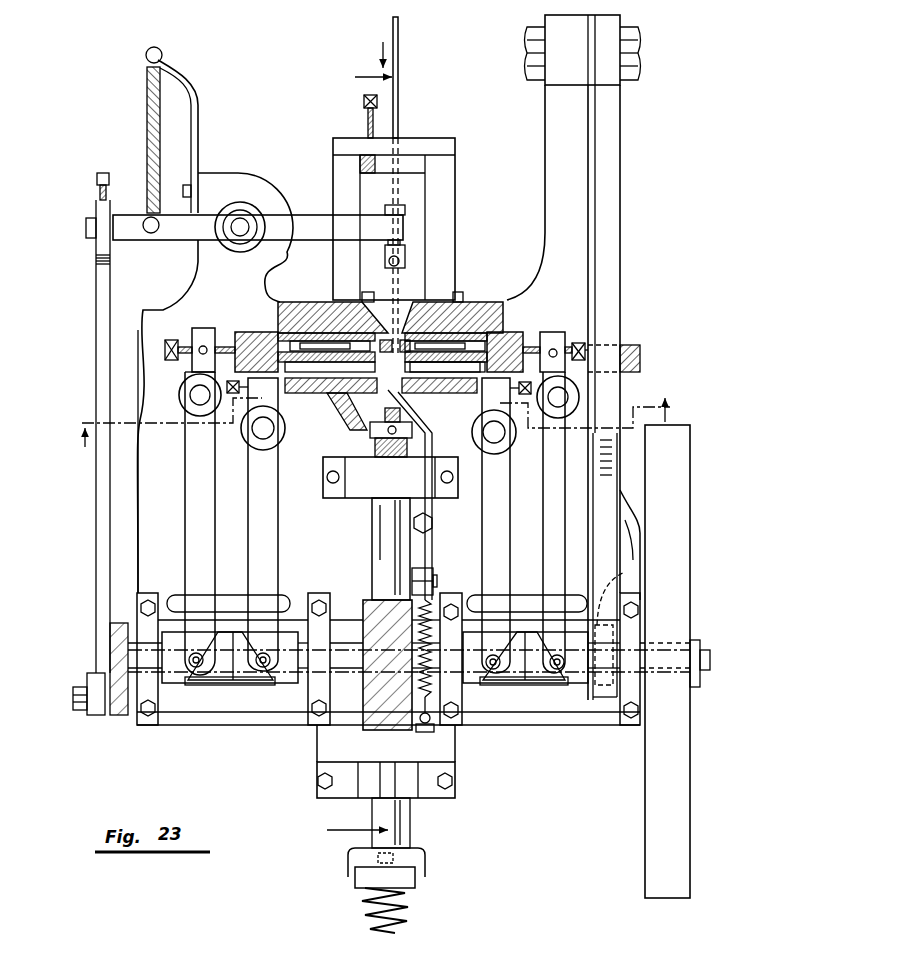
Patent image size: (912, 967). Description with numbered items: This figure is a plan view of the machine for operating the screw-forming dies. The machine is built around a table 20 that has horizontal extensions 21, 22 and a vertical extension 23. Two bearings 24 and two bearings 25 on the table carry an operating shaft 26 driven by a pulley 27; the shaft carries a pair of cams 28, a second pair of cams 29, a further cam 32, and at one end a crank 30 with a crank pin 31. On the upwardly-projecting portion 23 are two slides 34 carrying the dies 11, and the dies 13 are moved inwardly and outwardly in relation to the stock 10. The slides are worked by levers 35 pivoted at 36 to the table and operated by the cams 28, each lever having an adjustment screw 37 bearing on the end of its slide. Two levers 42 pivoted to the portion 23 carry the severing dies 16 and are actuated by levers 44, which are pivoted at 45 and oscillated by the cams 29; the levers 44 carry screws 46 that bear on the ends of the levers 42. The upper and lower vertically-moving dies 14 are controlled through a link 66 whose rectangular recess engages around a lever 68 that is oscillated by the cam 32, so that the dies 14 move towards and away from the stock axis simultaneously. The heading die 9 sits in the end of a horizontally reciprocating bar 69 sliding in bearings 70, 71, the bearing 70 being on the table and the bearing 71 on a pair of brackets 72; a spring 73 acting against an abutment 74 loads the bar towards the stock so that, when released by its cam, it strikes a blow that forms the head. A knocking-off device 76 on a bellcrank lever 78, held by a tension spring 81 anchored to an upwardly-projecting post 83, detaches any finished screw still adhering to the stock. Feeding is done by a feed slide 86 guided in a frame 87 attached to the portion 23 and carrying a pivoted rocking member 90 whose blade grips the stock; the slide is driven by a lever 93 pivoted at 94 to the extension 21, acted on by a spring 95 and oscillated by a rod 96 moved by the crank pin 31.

The heading die 9 is at (372, 432).
The stock 10 is at (399, 118).
The dies 11 is at (347, 312).
The dies 13 is at (438, 365).
The vertically-moving dies 14 is at (406, 300).
The severing dies 16 is at (420, 396).
The table 20 is at (140, 547).
The horizontal extension 21 is at (222, 185).
The horizontal extension 22 is at (557, 170).
The vertical extension 23 is at (481, 303).
The bearings 24 is at (607, 742).
The bearings 25 is at (475, 698).
The operating shaft 26 is at (343, 650).
The pulley 27 is at (686, 545).
The cams 28 is at (216, 684).
The cams 29 is at (240, 684).
The crank 30 is at (120, 628).
The crank pin 31 is at (78, 706).
The cam 32 is at (622, 590).
The slides 34 is at (258, 340).
The levers 35 is at (190, 486).
The pivot 36 is at (194, 394).
The adjustment screw 37 is at (186, 345).
The levers 42 is at (298, 394).
The levers 44 is at (300, 530).
The pivot 45 is at (262, 430).
The screws 46 is at (216, 392).
The link 66 is at (632, 345).
The lever 68 is at (610, 206).
The horizontally reciprocating bar 69 is at (385, 540).
The bearing 70 is at (390, 477).
The bearing 71 is at (412, 790).
The brackets 72 is at (448, 746).
The spring 73 is at (410, 906).
The abutment 74 is at (416, 882).
The knocking-off device 76 is at (345, 412).
The bellcrank lever 78 is at (428, 552).
The tension spring 81 is at (433, 592).
The post 83 is at (410, 718).
The feed slide 86 is at (415, 222).
The frame 87 is at (441, 195).
The rocking member 90 is at (386, 212).
The lever 93 is at (305, 226).
The pivot 94 is at (242, 226).
The spring 95 is at (147, 125).
The rod 96 is at (108, 296).